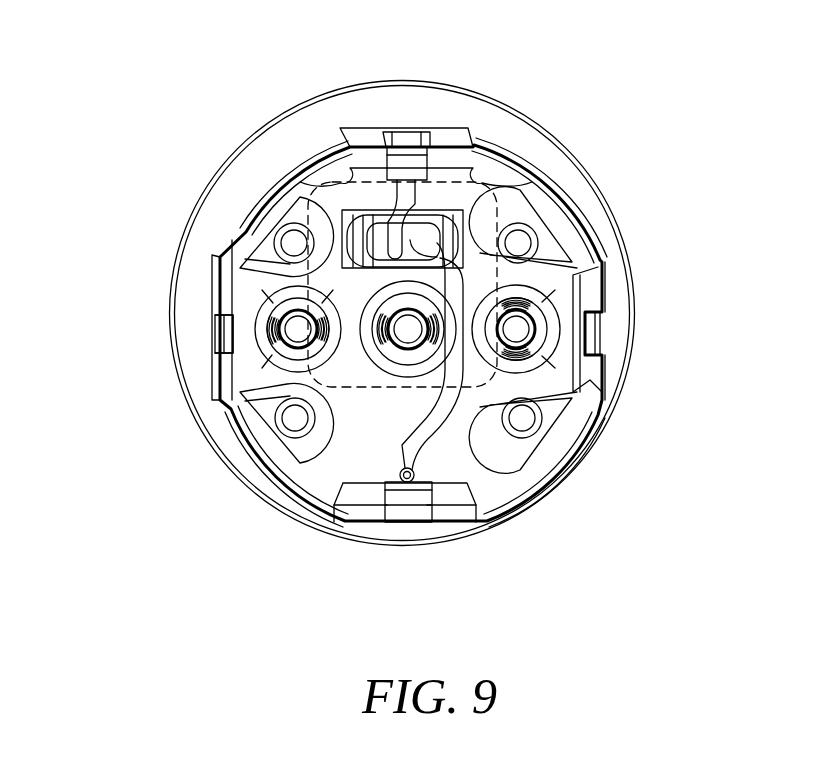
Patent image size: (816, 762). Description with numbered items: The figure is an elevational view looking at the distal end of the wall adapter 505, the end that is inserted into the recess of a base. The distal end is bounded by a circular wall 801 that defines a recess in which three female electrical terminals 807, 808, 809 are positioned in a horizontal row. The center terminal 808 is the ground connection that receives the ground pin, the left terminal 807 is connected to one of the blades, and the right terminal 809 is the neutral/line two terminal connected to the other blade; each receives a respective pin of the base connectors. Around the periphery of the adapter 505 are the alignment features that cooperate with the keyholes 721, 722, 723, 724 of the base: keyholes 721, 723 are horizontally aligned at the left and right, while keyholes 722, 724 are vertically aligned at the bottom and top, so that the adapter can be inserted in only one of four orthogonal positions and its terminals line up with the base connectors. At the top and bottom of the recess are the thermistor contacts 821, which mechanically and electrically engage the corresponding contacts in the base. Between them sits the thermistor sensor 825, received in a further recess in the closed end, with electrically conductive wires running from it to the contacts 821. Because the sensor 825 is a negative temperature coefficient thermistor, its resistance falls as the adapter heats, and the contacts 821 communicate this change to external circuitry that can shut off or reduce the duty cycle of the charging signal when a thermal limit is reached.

The adapter 505 is at (323, 95).
The wall 801 is at (277, 183).
The left terminal 807 is at (282, 356).
The center terminal 808 is at (440, 345).
The right terminal 809 is at (540, 310).
The thermistor sensor 825 is at (378, 207).
The keyhole 722 is at (426, 512).
The thermistor contacts 821 is at (430, 148).
The keyhole 724 is at (421, 153).
The keyhole 721 is at (597, 343).
The keyhole 723 is at (217, 333).